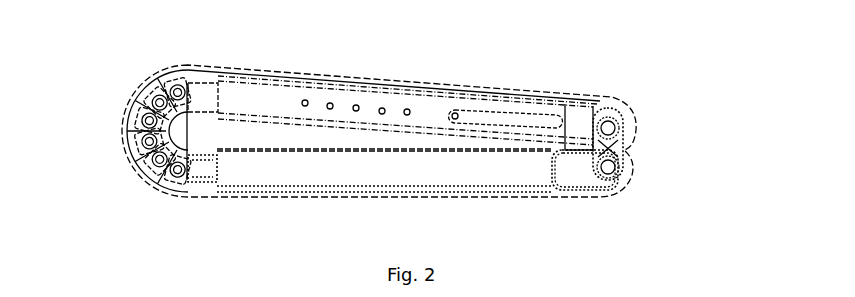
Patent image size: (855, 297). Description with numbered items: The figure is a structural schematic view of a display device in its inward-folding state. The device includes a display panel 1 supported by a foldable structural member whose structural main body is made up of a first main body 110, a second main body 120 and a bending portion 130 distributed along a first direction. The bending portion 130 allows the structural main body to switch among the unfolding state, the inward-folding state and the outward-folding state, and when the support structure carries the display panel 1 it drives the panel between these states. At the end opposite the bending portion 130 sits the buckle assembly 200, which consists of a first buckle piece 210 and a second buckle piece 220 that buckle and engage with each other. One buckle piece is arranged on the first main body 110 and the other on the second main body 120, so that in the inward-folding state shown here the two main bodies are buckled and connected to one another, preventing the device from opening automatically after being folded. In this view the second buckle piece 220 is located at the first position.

The display panel 1 is at (360, 80).
The first main body 110 is at (290, 97).
The second main body 120 is at (333, 173).
The bending portion 130 is at (140, 127).
The buckle assembly 200 is at (679, 160).
The first buckle piece 210 is at (620, 128).
The second buckle piece 220 is at (620, 167).